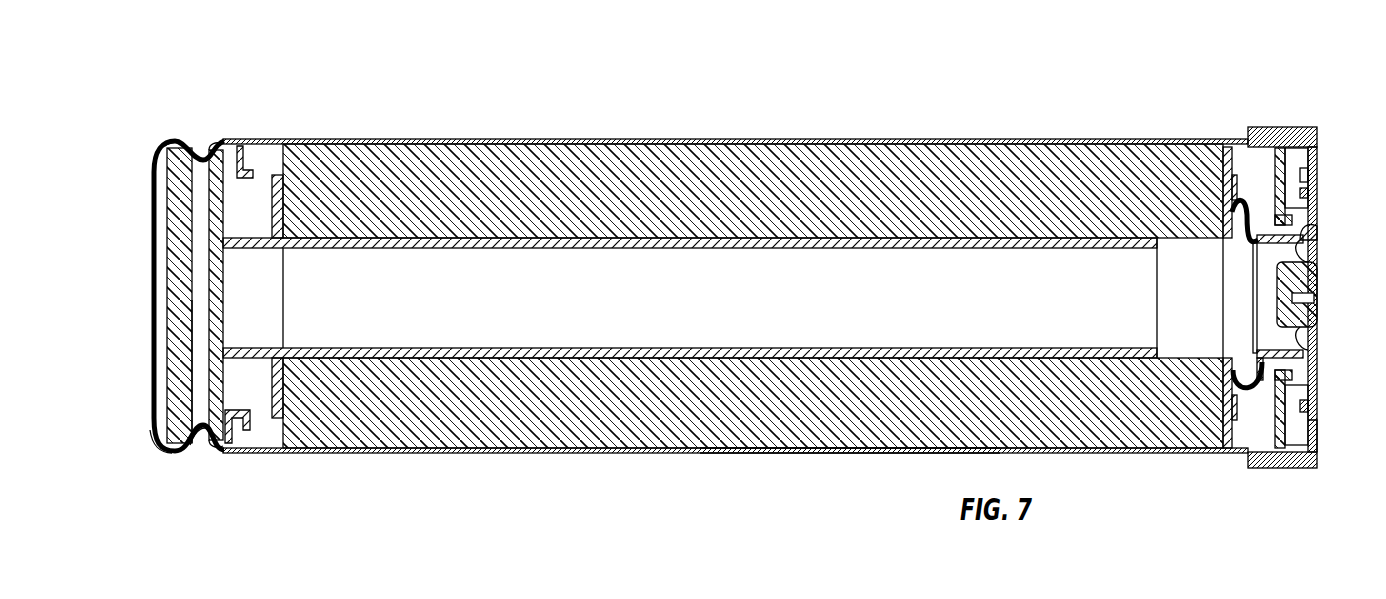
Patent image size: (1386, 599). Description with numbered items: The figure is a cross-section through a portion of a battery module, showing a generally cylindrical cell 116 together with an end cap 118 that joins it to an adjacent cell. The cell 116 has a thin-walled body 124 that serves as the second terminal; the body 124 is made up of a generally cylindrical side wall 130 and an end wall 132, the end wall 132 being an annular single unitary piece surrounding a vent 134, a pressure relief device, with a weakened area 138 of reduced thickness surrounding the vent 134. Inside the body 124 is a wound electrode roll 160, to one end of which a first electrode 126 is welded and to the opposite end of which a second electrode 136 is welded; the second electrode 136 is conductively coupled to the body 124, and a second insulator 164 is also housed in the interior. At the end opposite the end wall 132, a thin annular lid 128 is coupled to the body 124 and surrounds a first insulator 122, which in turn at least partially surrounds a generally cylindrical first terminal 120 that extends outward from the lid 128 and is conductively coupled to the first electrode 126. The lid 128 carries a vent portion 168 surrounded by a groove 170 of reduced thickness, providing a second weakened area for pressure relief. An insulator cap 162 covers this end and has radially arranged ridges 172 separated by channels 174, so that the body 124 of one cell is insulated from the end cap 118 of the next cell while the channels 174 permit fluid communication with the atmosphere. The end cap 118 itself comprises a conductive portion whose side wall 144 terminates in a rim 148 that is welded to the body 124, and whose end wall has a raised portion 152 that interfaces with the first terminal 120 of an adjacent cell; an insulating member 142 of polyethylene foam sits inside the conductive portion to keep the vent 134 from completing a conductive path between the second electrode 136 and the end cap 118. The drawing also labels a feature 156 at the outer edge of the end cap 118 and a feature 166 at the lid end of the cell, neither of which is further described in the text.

The cell 116 is at (727, 498).
The end cap 118 is at (123, 140).
The first terminal 120 is at (1308, 350).
The first insulator 122 is at (1290, 373).
The body 124 is at (531, 456).
The first electrode 126 is at (1220, 180).
The lid 128 is at (1273, 187).
The side wall 130 is at (842, 454).
The end wall 132 is at (205, 438).
The vent 134 is at (207, 370).
The second electrode 136 is at (284, 195).
The weakened area 138 is at (165, 437).
The insulating member 142 is at (165, 141).
The side wall 144 is at (185, 148).
The rim 148 is at (221, 447).
The raised portion 152 is at (152, 307).
The outer shell 156 is at (156, 166).
The electrode roll 160 is at (541, 165).
The insulator cap 162 is at (1270, 468).
The second insulator 164 is at (241, 149).
The spring contact 166 is at (1250, 380).
The vent portion 168 is at (1290, 395).
The groove 170 is at (1317, 450).
The ridges 172 is at (1312, 165).
The channels 174 is at (1311, 193).